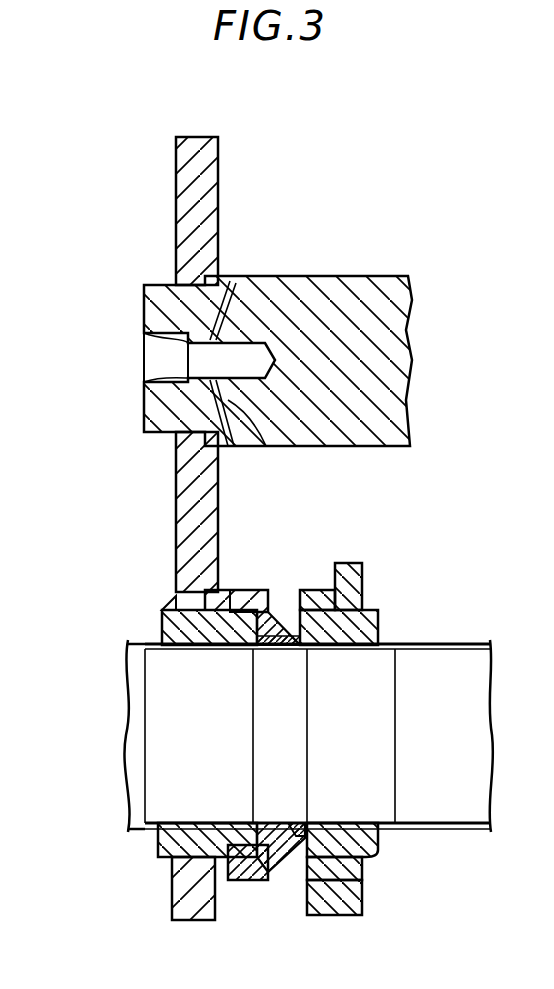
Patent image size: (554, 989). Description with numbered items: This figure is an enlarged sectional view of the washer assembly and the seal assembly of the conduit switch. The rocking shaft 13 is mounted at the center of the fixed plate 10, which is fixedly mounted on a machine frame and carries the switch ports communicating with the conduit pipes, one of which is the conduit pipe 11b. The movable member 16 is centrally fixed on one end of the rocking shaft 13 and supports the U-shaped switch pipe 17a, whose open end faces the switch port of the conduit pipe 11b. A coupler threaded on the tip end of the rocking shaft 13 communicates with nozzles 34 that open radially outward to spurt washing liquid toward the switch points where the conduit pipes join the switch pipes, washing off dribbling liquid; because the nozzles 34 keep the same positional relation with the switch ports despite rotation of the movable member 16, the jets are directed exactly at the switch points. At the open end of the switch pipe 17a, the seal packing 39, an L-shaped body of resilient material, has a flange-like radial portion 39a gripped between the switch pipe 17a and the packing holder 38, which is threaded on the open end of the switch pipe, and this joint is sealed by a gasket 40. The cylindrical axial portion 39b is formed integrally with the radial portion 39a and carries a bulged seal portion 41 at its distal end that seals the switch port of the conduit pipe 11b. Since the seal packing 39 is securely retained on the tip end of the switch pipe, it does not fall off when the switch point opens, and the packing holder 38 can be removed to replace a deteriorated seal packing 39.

The fixed plate 10 is at (358, 892).
The conduit pipe 11b is at (446, 644).
The rocking shaft 13 is at (370, 290).
The movable member 16 is at (206, 161).
The switch pipe 17a is at (160, 612).
The nozzle 34 is at (220, 308).
The packing holder 38 is at (284, 860).
The seal packing 39 is at (262, 651).
The radial portion 39a is at (221, 822).
The axial portion 39b is at (272, 821).
The gasket 40 is at (210, 872).
The seal portion 41 is at (298, 650).